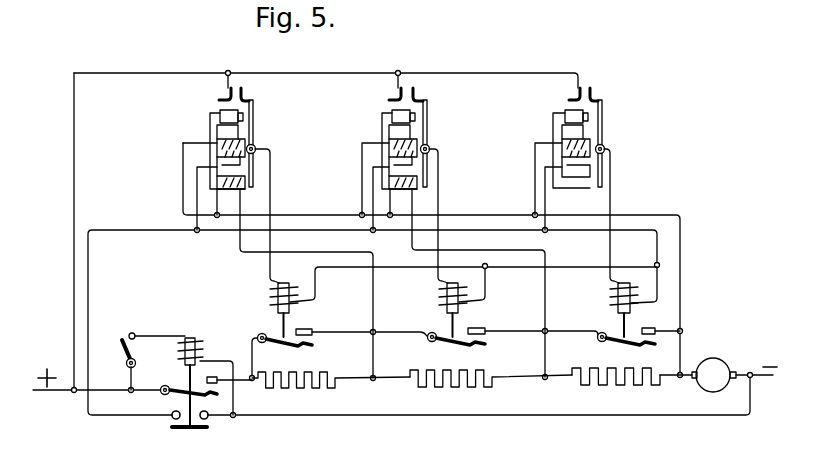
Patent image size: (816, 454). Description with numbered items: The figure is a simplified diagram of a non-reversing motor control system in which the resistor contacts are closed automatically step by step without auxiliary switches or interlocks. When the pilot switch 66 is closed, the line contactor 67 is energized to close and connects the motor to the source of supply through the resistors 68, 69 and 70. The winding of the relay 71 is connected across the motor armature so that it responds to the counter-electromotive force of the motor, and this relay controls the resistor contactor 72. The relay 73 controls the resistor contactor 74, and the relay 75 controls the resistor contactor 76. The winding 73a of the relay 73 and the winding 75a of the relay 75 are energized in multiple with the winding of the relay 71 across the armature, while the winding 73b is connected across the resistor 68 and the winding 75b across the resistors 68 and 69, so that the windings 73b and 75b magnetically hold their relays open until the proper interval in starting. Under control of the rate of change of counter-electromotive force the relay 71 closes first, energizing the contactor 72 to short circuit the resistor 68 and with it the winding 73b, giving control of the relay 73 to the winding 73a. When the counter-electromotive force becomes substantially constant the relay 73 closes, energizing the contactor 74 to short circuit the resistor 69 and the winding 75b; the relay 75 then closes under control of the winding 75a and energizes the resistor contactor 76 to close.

The relay 75 is at (285, 233).
The winding of the relay 75 75a is at (220, 142).
The winding of the relay 75 75b is at (232, 187).
The relay 73 is at (459, 232).
The winding of the relay 73 73a is at (394, 140).
The winding of the relay 73 73b is at (405, 188).
The relay 71 is at (586, 185).
The resistor contactor 76 is at (286, 314).
The resistor contactor 74 is at (457, 314).
The resistor contactor 72 is at (627, 314).
The resistor 70 is at (331, 392).
The resistor 69 is at (491, 390).
The resistor 68 is at (616, 388).
The line contactor 67 is at (177, 381).
The pilot switch 66 is at (120, 343).